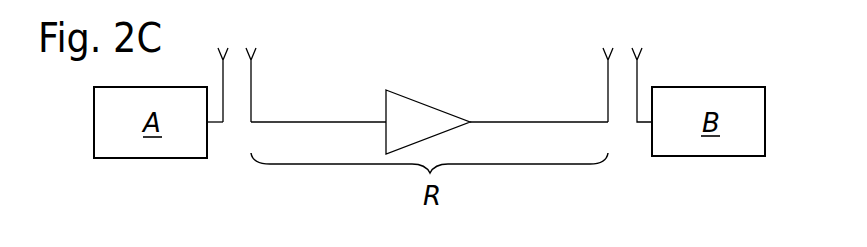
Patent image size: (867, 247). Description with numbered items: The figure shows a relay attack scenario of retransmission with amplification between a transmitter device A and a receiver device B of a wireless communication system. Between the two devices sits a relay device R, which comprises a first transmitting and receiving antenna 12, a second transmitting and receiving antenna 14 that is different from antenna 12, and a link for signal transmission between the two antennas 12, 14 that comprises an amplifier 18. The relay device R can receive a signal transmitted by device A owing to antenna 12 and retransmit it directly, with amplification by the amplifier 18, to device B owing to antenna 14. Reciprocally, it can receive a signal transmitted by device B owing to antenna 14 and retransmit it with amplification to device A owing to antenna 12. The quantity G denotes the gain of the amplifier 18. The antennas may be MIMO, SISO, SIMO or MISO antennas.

The first transmitting and receiving antenna 12 is at (252, 88).
The second transmitting and receiving antenna 14 is at (608, 88).
The amplifier 18 is at (424, 131).